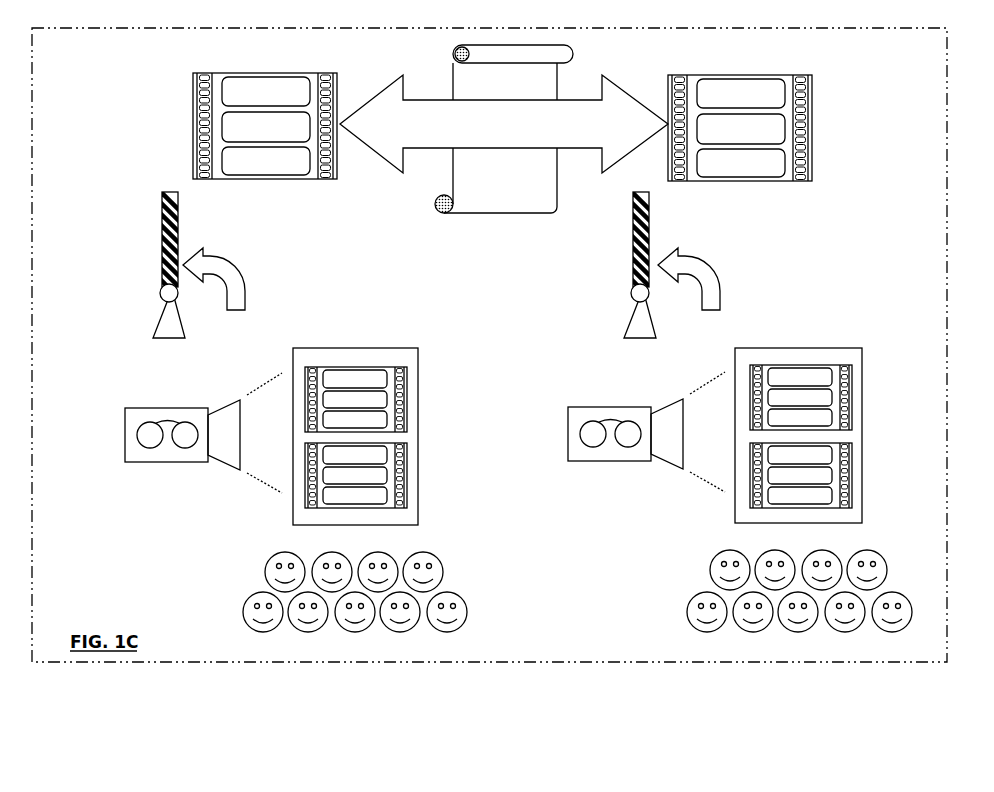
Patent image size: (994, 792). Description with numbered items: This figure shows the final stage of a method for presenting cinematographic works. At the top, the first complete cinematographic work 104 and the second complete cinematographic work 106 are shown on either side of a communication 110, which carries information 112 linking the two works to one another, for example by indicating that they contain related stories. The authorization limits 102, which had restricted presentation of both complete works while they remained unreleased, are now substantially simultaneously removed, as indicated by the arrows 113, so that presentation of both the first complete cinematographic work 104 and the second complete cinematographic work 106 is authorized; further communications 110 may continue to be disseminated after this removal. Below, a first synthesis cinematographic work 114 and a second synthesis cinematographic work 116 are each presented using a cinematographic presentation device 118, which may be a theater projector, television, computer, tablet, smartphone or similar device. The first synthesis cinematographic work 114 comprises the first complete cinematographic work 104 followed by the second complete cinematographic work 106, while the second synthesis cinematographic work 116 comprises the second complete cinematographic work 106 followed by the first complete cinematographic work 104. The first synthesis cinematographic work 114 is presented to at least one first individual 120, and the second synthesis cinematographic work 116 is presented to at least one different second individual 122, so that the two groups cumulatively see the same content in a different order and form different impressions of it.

The authorization limits 102 is at (167, 230).
The first complete cinematographic work 104 is at (195, 120).
The second complete cinematographic work 106 is at (812, 115).
The communication 110 is at (523, 191).
The information 112 is at (523, 133).
The arrows 113 is at (247, 287).
The first synthesis cinematographic work 114 is at (377, 348).
The second synthesis cinematographic work 116 is at (810, 347).
The cinematographic presentation device 118 is at (153, 462).
The first individual 120 is at (230, 589).
The second individual 122 is at (674, 589).